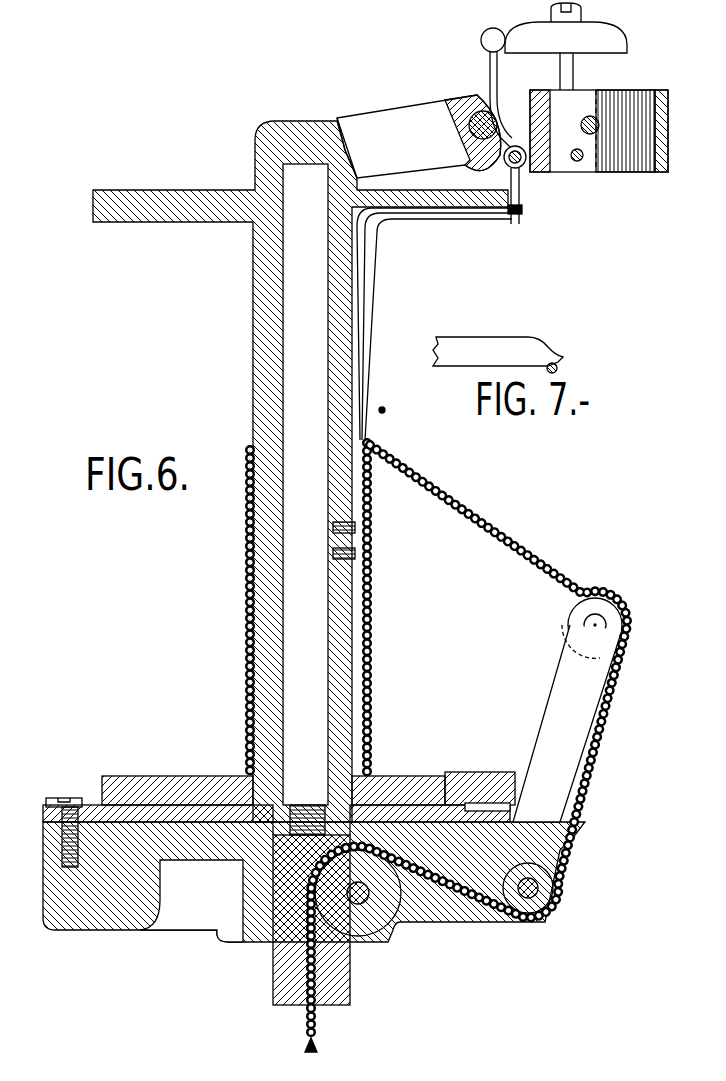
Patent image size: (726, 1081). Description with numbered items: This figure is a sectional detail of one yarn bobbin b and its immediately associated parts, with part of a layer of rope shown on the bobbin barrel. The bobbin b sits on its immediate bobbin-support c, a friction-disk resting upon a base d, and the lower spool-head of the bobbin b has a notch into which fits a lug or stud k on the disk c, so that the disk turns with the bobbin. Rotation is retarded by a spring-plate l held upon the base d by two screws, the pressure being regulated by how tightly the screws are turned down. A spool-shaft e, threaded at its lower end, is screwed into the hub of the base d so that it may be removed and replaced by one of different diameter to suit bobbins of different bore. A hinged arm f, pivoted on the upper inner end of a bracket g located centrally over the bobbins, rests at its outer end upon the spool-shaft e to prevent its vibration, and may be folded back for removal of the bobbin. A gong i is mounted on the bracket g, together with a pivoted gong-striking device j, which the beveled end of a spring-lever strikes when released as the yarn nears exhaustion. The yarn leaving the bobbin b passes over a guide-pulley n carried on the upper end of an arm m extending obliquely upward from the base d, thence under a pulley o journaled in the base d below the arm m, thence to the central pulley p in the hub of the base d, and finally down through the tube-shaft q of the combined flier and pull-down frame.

In FIG. 6, the bobbin b is at (255, 374).
In FIG. 6, the bobbin-support c is at (390, 778).
In FIG. 6, the base d is at (314, 882).
In FIG. 6, the spool-shaft e is at (305, 499).
In FIG. 6, the arm f is at (419, 136).
In FIG. 6, the bracket g is at (599, 117).
In FIG. 6, the gong i is at (566, 46).
In FIG. 6, the gong-striking device j is at (496, 80).
In FIG. 7, the gong-striking device j is at (559, 368).
In FIG. 6, the lug or stud k is at (447, 790).
In FIG. 6, the spring-plate l is at (95, 805).
In FIG. 6, the arm m is at (567, 723).
In FIG. 6, the guide-pulley n is at (368, 336).
In FIG. 7, the guide-pulley n is at (498, 352).
In FIG. 6, the pulley o is at (558, 892).
In FIG. 6, the central pulley p is at (400, 899).
In FIG. 6, the tube-shaft q is at (350, 960).